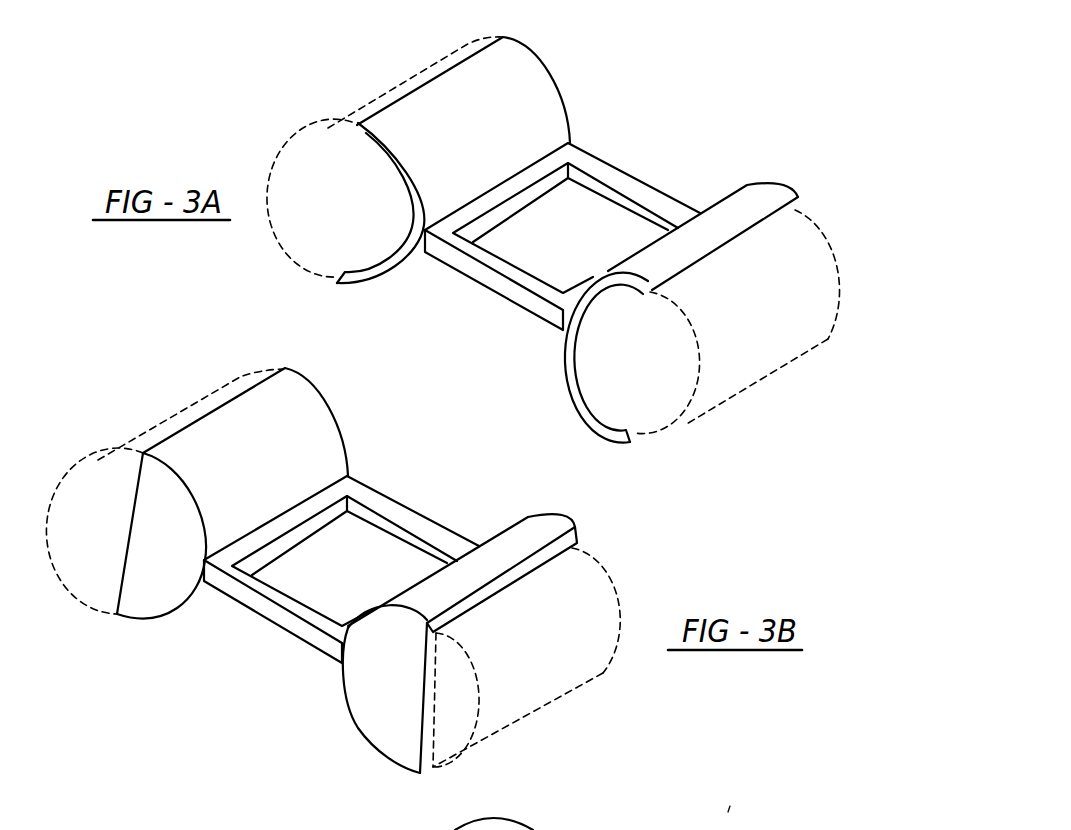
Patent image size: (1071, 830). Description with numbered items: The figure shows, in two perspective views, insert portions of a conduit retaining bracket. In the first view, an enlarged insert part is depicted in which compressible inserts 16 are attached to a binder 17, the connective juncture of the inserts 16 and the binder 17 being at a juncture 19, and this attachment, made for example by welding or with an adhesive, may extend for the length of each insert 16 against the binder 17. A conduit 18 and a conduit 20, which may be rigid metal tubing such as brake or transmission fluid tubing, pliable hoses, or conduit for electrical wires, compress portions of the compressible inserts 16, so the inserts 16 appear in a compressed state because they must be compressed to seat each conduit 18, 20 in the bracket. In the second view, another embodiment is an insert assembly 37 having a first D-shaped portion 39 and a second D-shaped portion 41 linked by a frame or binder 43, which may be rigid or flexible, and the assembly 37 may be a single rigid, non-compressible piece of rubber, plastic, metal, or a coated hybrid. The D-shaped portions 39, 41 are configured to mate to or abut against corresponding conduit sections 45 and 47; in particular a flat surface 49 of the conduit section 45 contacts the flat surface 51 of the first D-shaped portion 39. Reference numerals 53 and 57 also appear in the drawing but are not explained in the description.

In FIG. 3A, the compressible insert 16 is at (550, 72).
In FIG. 3A, the binder 17 is at (637, 177).
In FIG. 3A, the conduit 18 is at (296, 222).
In FIG. 3A, the juncture 19 is at (577, 141).
In FIG. 3A, the conduit 20 is at (828, 250).
In FIG. 3B, the insert assembly 37 is at (520, 452).
In FIG. 3B, the first D-shaped portion 39 is at (560, 517).
In FIG. 3B, the second D-shaped portion 41 is at (333, 400).
In FIG. 3B, the frame or binder 43 is at (417, 507).
In FIG. 3B, the conduit section 45 is at (607, 583).
In FIG. 3B, the conduit section 47 is at (73, 557).
In FIG. 3B, the flat surface 49 is at (548, 645).
In FIG. 3B, the flat surface 51 is at (427, 777).
In FIG. 3B, the component 53 is at (725, 818).
In FIG. 3B, the component 57 is at (543, 816).